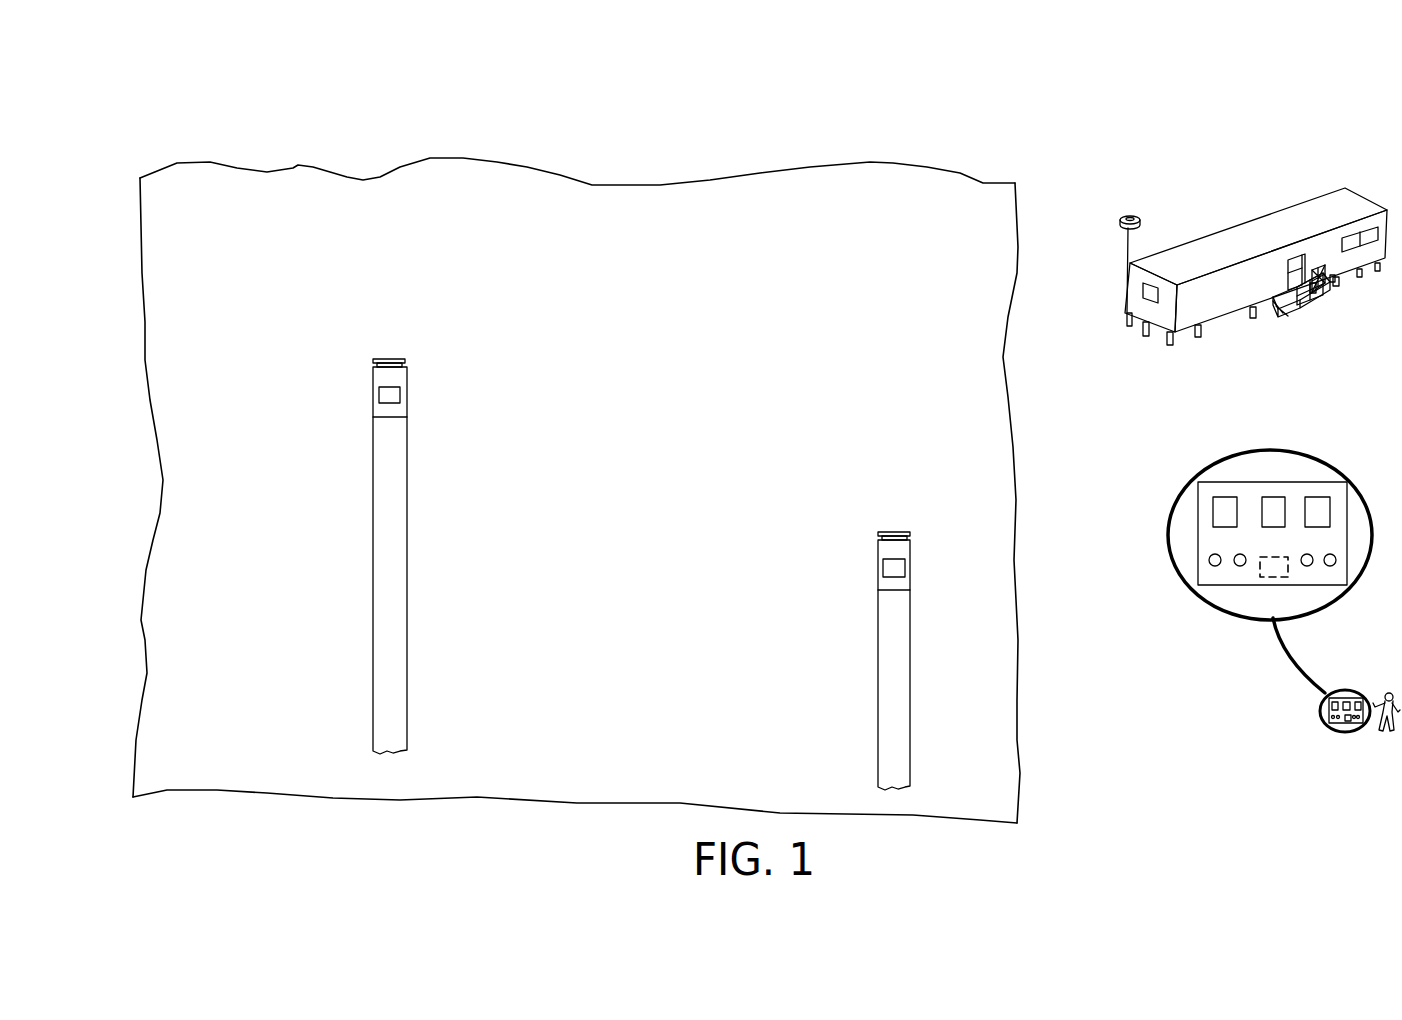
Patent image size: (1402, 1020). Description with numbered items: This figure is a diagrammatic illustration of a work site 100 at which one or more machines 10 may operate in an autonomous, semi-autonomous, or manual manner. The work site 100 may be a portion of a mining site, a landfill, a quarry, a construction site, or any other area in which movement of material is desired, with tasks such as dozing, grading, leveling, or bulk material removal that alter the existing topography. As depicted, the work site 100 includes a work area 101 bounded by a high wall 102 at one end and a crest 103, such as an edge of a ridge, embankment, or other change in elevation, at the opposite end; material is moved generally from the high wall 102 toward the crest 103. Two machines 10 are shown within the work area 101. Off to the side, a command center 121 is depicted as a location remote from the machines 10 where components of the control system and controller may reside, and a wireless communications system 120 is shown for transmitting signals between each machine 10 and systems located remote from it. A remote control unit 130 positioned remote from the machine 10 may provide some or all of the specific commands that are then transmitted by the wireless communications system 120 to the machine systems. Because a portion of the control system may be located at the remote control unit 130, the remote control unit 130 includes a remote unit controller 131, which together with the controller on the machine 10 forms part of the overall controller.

The work site 100 is at (180, 135).
The work area 101 is at (198, 327).
The high wall 102 is at (933, 815).
The crest 103 is at (298, 165).
The machine 10 is at (387, 410).
The wireless communications system 120 is at (1145, 220).
The command center 121 is at (1265, 242).
The remote control unit 130 is at (1228, 468).
The remote unit controller 131 is at (1278, 572).